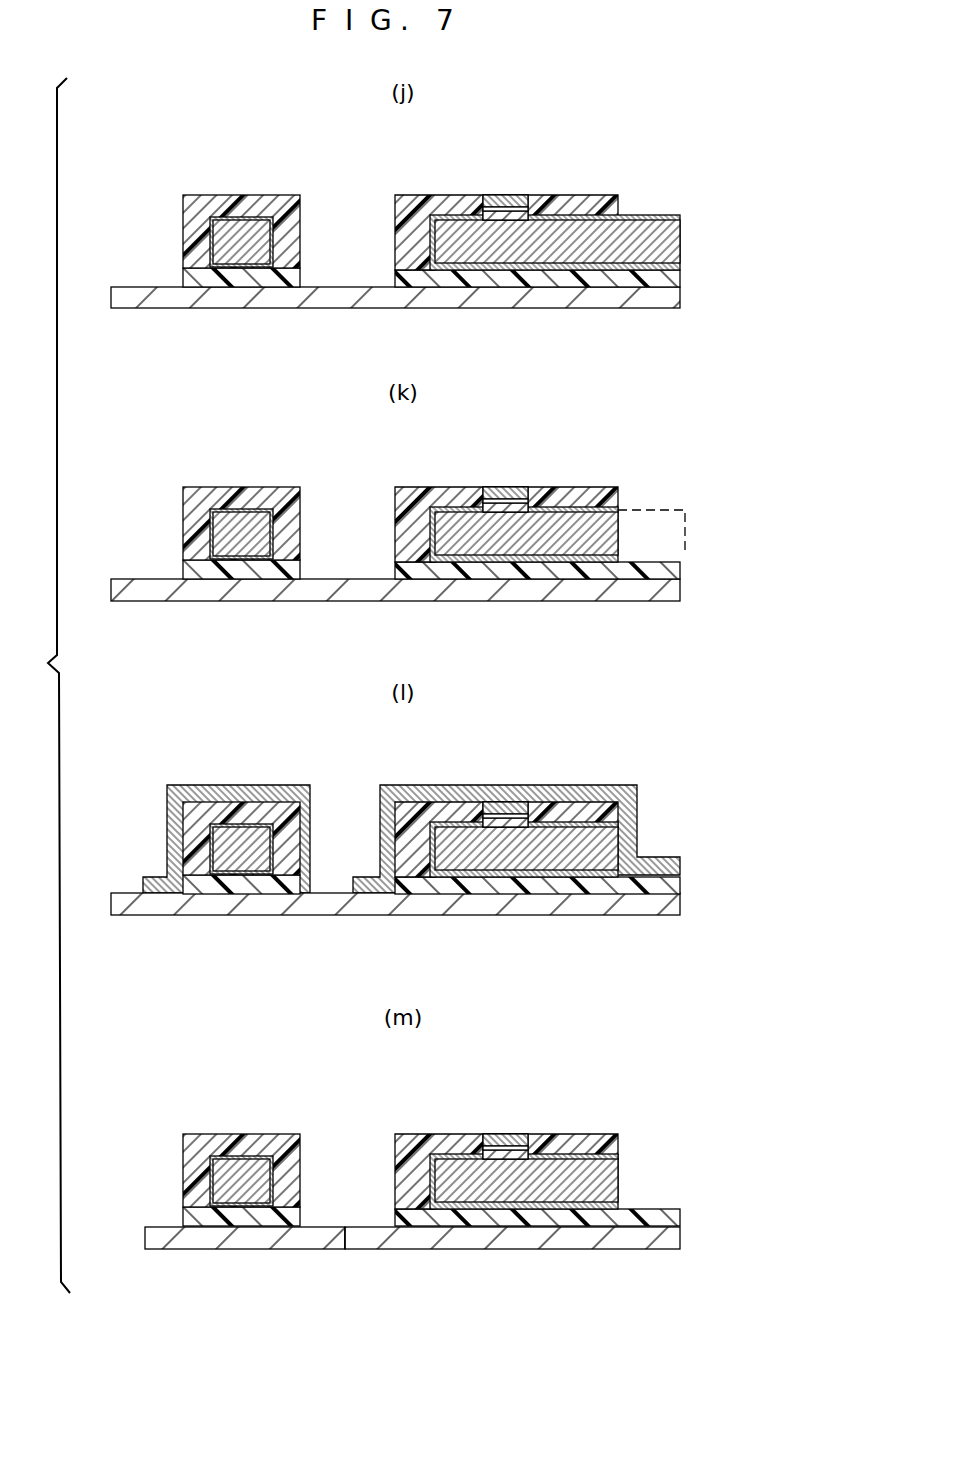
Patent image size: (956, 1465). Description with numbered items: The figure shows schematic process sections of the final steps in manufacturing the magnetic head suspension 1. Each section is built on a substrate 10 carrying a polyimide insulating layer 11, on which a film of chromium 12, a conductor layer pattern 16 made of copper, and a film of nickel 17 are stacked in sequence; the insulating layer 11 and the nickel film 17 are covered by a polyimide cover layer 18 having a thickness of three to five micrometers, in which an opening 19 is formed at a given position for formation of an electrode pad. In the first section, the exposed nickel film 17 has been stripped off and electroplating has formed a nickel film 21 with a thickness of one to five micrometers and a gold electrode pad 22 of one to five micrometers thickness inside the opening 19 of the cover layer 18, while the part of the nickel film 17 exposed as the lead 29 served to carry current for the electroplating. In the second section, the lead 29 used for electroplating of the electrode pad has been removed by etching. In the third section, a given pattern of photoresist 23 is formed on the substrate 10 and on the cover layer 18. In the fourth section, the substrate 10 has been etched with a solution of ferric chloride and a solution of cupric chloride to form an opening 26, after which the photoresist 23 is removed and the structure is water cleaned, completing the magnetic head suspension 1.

The magnetic head suspension 1 is at (634, 1104).
The substrate 10 is at (593, 303).
The insulating layer 11 is at (657, 277).
The film of chromium 12 is at (228, 258).
The conductor layer pattern 16 is at (240, 230).
The film of nickel 17 is at (214, 210).
The cover layer 18 is at (273, 197).
The opening 19 is at (492, 195).
The nickel film 21 is at (508, 207).
The gold electrode pad 22 is at (513, 202).
The photoresist 23 is at (177, 788).
The opening 26 is at (325, 1237).
The lead 29 is at (680, 215).